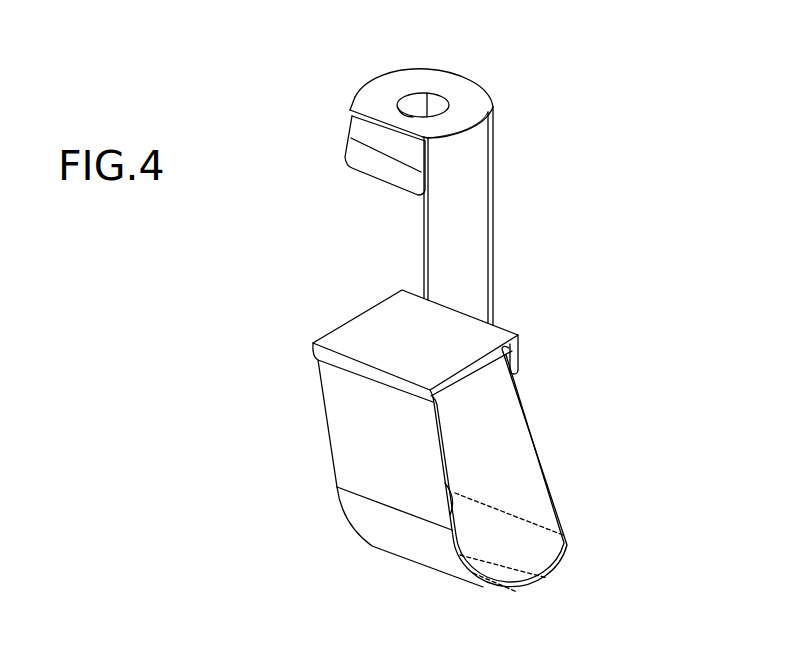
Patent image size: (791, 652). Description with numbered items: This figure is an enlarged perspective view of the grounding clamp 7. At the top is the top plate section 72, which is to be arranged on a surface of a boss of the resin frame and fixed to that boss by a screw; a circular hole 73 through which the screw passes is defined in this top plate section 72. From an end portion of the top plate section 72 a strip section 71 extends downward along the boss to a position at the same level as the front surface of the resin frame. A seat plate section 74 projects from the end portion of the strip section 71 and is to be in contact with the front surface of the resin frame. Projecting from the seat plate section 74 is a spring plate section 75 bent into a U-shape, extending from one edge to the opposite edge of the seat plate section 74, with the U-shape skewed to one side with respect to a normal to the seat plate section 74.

The grounding clamp 7 is at (459, 331).
The strip section 71 is at (487, 216).
The top plate section 72 is at (421, 79).
The circular hole 73 is at (344, 117).
The seat plate section 74 is at (415, 329).
The spring plate section 75 is at (442, 497).